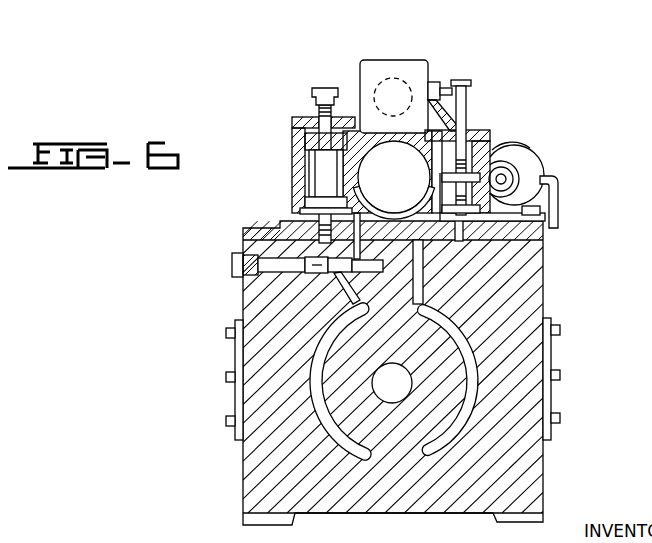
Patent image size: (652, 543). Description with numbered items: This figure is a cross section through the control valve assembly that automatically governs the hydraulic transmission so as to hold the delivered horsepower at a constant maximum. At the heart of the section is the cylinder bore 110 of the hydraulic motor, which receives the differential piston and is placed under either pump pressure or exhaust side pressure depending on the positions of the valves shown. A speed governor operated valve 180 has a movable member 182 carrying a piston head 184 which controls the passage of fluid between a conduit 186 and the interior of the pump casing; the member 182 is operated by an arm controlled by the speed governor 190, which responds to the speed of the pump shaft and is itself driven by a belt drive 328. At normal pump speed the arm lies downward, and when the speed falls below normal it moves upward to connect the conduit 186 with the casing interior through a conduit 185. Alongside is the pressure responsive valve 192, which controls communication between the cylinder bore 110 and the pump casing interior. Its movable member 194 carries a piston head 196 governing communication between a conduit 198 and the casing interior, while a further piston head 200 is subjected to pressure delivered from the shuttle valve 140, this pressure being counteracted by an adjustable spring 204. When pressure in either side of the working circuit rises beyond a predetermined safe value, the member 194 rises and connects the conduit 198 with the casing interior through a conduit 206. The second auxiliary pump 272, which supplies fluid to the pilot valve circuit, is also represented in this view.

The cylinder bore 110 is at (392, 172).
The shuttle valve 140 is at (337, 258).
The speed governor operated valve 180 is at (492, 157).
The movable member 182 is at (462, 122).
The piston head 184 is at (542, 178).
The conduit 185 is at (490, 212).
The conduit 186 is at (348, 197).
The speed governor 190 is at (400, 68).
The pressure responsive valve 192 is at (305, 117).
The movable member 194 is at (322, 178).
The piston head 196 is at (320, 143).
The conduit 198 is at (440, 182).
The piston head 200 is at (312, 207).
The adjustable spring 204 is at (292, 133).
The conduit 206 is at (293, 214).
The second auxiliary pump 272 is at (527, 163).
The belt drive 328 is at (520, 140).